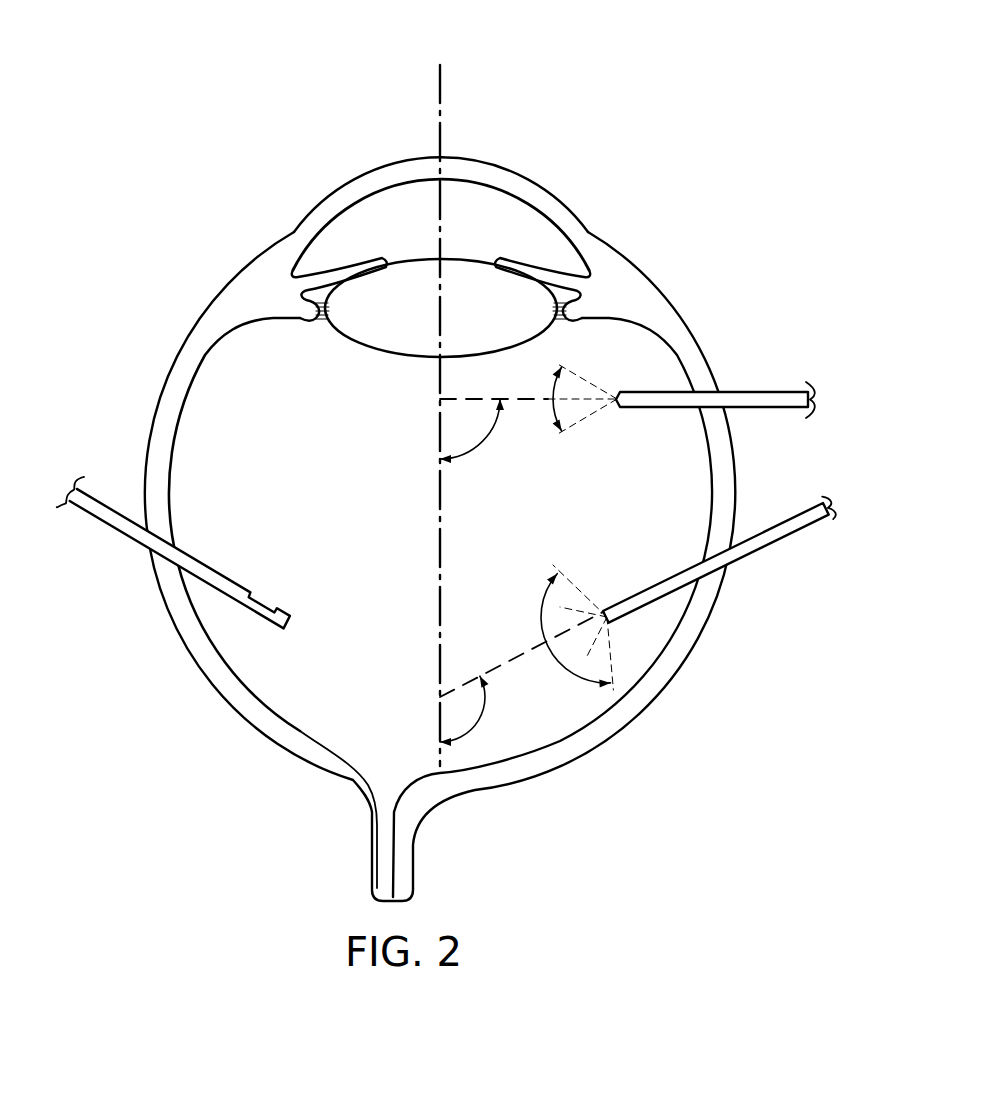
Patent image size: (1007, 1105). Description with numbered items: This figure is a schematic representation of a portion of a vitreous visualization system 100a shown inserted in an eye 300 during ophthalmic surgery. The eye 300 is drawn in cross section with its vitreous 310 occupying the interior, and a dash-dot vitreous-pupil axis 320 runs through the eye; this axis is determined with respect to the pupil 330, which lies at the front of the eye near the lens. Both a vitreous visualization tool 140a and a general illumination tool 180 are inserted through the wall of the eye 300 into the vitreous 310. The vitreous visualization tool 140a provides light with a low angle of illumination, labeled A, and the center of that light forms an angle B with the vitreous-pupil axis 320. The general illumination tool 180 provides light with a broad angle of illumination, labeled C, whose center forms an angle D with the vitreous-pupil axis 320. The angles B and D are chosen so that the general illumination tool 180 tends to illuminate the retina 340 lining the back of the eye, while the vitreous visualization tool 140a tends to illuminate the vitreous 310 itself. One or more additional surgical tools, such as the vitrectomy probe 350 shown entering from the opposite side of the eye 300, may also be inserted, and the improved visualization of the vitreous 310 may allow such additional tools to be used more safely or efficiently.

The vitreous visualization system 100a is at (283, 98).
The eye 300 is at (148, 418).
The vitreous 310 is at (356, 545).
The vitreous-pupil axis 320 is at (448, 78).
The pupil 330 is at (458, 259).
The retina 340 is at (511, 776).
The vitrectomy probe 350 is at (113, 527).
The vitreous visualization tool 140a is at (765, 390).
The general illumination tool 180 is at (781, 538).